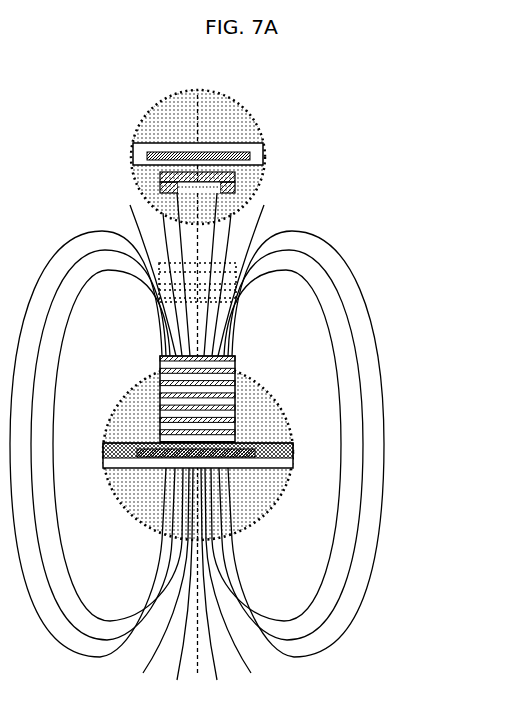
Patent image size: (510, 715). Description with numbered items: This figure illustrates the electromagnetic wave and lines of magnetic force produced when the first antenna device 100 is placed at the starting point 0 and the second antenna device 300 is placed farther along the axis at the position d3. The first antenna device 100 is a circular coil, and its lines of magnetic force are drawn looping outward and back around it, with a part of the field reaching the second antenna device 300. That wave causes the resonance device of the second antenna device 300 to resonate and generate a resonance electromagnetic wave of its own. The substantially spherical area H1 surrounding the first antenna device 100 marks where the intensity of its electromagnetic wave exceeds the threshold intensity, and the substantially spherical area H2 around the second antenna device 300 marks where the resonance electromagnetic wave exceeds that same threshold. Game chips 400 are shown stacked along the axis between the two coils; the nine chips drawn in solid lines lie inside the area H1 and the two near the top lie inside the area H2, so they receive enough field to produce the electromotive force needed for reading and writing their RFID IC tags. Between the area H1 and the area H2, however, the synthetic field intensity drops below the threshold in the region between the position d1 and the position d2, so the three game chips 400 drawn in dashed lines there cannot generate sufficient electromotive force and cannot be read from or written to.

The first antenna device 100 is at (282, 462).
The second antenna device 300 is at (257, 150).
The game chips 400 is at (234, 355).
The area H1 is at (276, 396).
The area H2 is at (236, 102).
The position d1 is at (240, 360).
The position d2 is at (228, 227).
The position d3 is at (275, 158).
The starting point O 0 is at (305, 452).